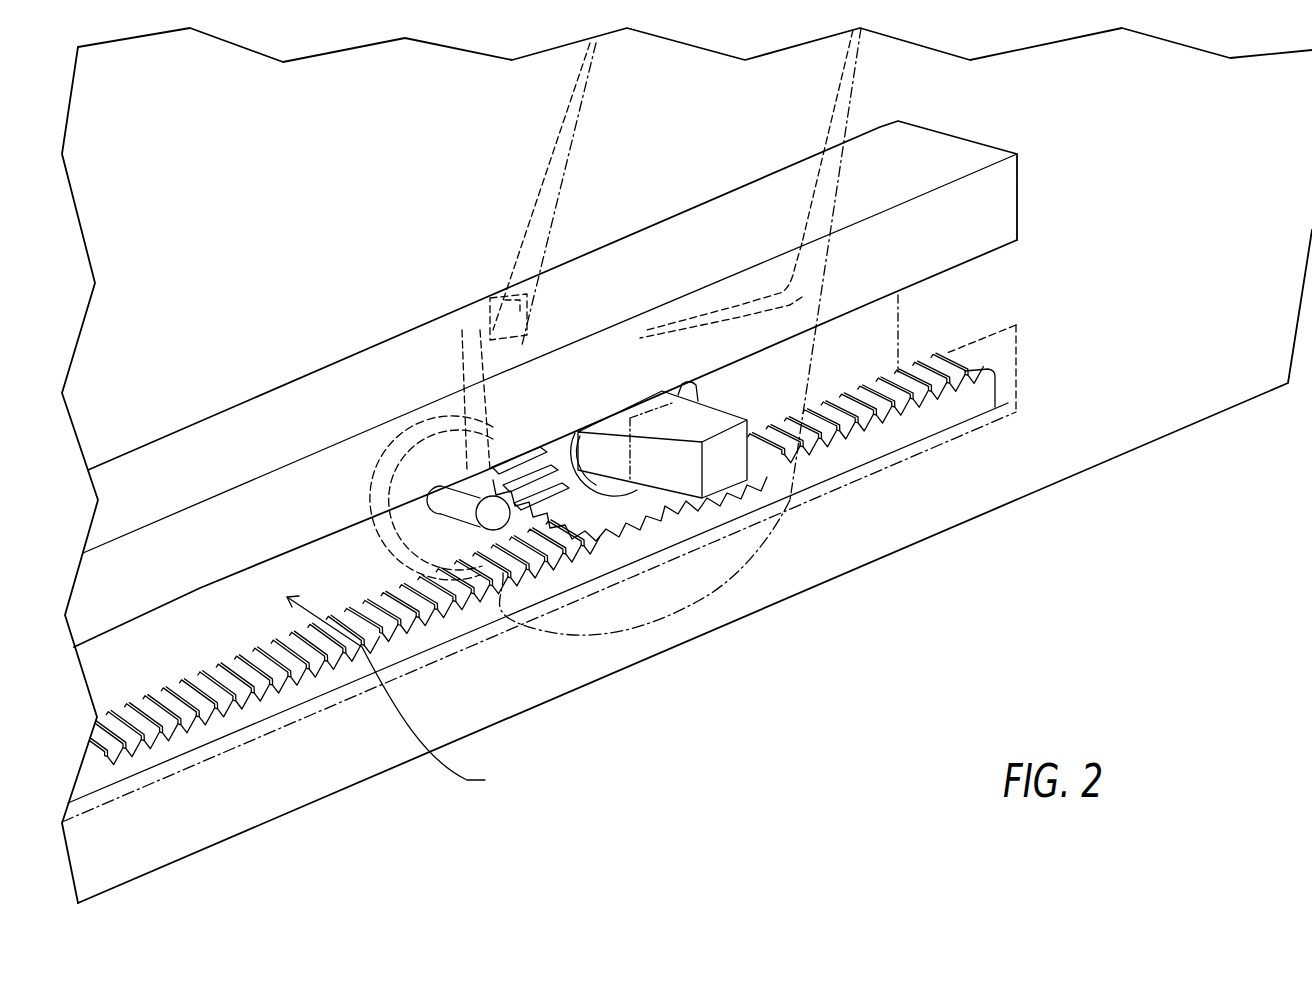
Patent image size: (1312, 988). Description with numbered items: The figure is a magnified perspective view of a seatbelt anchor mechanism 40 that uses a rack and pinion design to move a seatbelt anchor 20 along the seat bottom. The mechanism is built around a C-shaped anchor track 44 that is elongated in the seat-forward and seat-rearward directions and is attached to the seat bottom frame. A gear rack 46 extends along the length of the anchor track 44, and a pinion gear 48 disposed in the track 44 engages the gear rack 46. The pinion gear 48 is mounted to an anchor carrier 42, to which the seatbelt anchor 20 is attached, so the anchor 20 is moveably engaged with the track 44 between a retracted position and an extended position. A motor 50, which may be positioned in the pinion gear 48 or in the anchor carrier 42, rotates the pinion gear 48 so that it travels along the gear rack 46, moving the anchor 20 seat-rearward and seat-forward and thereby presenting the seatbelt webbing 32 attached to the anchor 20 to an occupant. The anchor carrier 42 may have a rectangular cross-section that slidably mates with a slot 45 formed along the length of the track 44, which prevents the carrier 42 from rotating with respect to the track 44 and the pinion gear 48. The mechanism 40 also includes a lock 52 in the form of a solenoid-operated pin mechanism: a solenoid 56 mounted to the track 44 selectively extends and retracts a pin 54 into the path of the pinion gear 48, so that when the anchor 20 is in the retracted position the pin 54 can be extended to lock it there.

The anchor 20 is at (495, 335).
The seatbelt webbing 32 is at (597, 163).
The seatbelt anchor mechanism 40 is at (972, 464).
The anchor carrier 42 is at (730, 468).
The anchor track 44 is at (1018, 182).
The slot 45 is at (402, 696).
The gear rack 46 is at (958, 355).
The pinion gear 48 is at (620, 503).
The motor 50 is at (547, 437).
The lock 52 is at (400, 423).
The pin 54 is at (496, 512).
The solenoid 56 is at (380, 482).